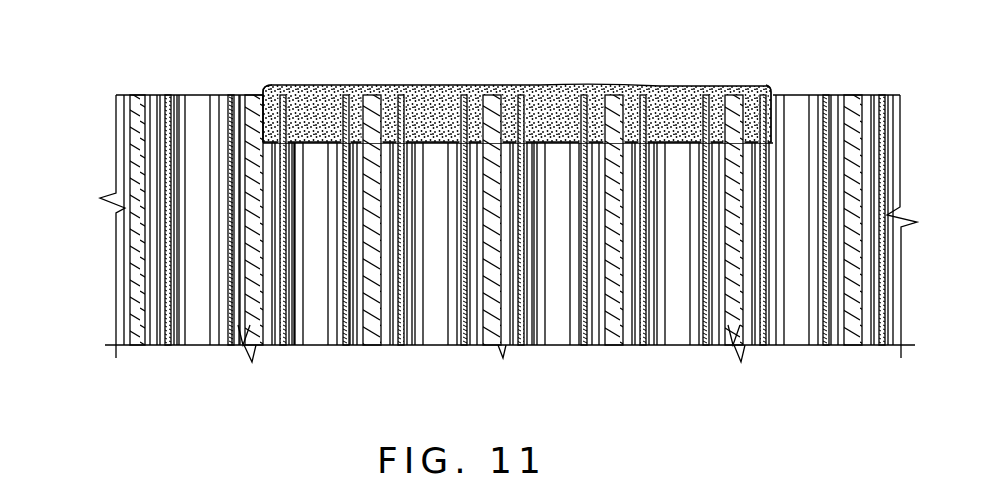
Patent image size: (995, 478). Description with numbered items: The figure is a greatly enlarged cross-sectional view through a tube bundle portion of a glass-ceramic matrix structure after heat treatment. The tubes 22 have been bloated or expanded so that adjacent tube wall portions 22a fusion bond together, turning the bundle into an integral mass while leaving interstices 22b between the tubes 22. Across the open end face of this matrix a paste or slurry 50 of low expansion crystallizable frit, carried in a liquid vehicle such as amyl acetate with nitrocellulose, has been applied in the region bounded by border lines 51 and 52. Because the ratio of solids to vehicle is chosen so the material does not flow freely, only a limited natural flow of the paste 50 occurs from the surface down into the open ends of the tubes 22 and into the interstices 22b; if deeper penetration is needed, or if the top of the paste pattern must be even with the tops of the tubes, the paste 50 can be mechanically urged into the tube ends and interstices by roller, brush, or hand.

The tubes 22 is at (216, 115).
The tube wall portions 22a is at (140, 105).
The interstices 22b is at (150, 333).
The paste or slurry 50 is at (537, 86).
The border line 51 is at (264, 90).
The border line 52 is at (771, 88).